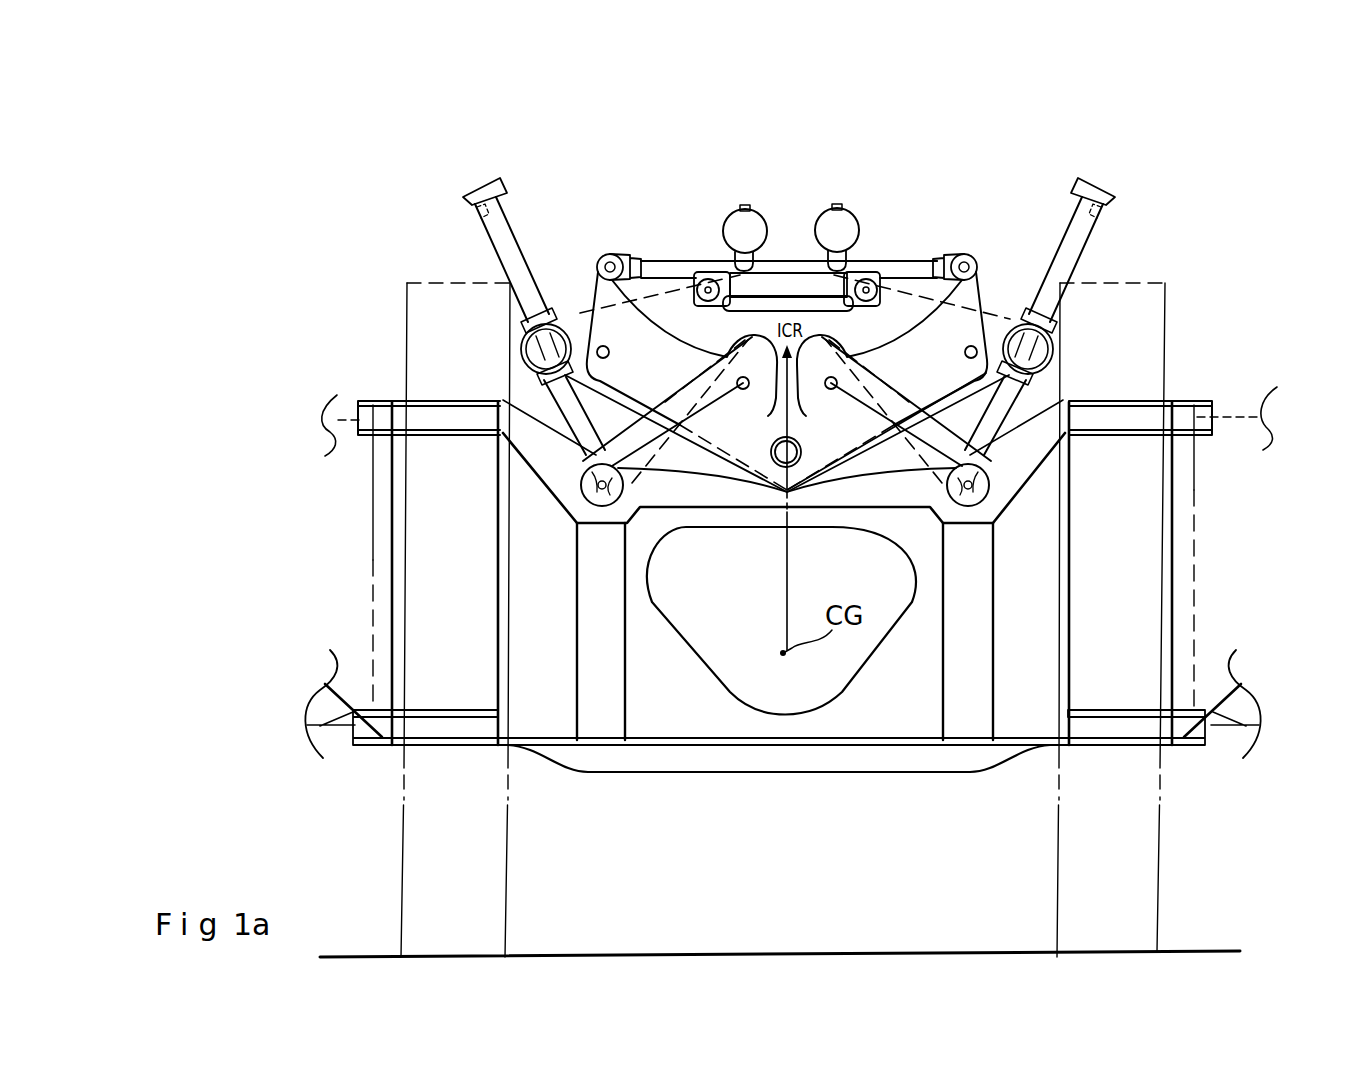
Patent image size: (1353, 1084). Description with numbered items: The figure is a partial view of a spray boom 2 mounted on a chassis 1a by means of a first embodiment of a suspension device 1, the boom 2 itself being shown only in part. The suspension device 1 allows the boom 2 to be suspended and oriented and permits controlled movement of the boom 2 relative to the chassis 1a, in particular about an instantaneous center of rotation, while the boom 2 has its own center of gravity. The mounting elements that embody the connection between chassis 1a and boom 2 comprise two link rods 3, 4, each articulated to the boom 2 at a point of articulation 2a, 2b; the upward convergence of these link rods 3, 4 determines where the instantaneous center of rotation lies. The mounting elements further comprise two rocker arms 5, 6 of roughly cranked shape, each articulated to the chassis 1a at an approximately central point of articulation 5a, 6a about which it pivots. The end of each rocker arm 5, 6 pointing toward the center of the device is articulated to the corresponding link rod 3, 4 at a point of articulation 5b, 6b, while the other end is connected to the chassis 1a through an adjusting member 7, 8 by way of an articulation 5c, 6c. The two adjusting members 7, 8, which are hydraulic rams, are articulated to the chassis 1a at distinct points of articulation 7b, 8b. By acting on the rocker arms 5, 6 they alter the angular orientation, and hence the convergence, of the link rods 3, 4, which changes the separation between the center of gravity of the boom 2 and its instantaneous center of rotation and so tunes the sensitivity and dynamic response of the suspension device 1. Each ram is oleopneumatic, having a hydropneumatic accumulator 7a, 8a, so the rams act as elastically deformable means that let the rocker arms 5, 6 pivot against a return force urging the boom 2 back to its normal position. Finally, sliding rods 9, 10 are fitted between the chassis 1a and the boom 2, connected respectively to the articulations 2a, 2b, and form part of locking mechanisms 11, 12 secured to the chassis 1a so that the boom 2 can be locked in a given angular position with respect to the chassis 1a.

The suspension device 1 is at (791, 225).
The chassis 1a is at (945, 403).
The spray boom 2 is at (1212, 571).
The point of articulation 2a is at (607, 490).
The point of articulation 2b is at (971, 490).
The link rod 3 is at (670, 456).
The link rod 4 is at (882, 440).
The rocker arm 5 is at (600, 300).
The point of articulation 5a is at (612, 352).
The point of articulation 5b is at (747, 391).
The articulation 5c is at (600, 250).
The rocker arm 6 is at (974, 302).
The point of articulation 6a is at (963, 352).
The point of articulation 6b is at (827, 391).
The articulation 6c is at (974, 262).
The adjusting member 7 is at (700, 258).
The hydropneumatic accumulator 7a is at (737, 208).
The point of articulation 7b is at (928, 278).
The adjusting member 8 is at (860, 310).
The hydropneumatic accumulator 8a is at (856, 224).
The point of articulation 8b is at (697, 291).
The rod 9 is at (500, 256).
The rod 10 is at (1082, 238).
The locking mechanism 11 is at (522, 347).
The locking mechanism 12 is at (1058, 345).